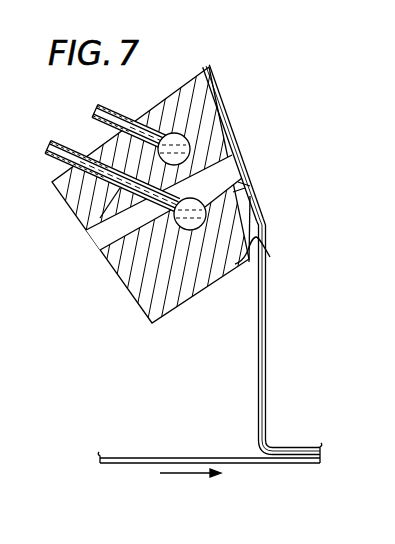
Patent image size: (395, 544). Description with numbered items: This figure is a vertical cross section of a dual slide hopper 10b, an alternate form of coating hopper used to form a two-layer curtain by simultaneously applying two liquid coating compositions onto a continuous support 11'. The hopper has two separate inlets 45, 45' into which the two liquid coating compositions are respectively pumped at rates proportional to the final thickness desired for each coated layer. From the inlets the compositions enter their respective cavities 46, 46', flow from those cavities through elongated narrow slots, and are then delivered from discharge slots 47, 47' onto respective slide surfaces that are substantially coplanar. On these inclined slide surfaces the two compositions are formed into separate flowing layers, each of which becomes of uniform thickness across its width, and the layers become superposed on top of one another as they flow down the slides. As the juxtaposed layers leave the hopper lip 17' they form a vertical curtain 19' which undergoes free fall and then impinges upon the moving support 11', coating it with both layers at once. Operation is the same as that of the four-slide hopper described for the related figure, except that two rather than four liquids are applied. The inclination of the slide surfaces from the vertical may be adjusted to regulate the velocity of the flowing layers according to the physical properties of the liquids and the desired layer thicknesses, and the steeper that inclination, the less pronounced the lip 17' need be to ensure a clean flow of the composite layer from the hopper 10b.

The dual slide hopper 10b is at (100, 265).
The inlet 45 is at (112, 167).
The inlet 45' is at (129, 115).
The cavity 46 is at (201, 252).
The cavity 46' is at (214, 149).
The discharge slot 47 is at (262, 199).
The discharge slot 47' is at (233, 143).
The hopper lip 17' is at (269, 251).
The vertical curtain 19' is at (288, 337).
The continuous support 11' is at (210, 454).